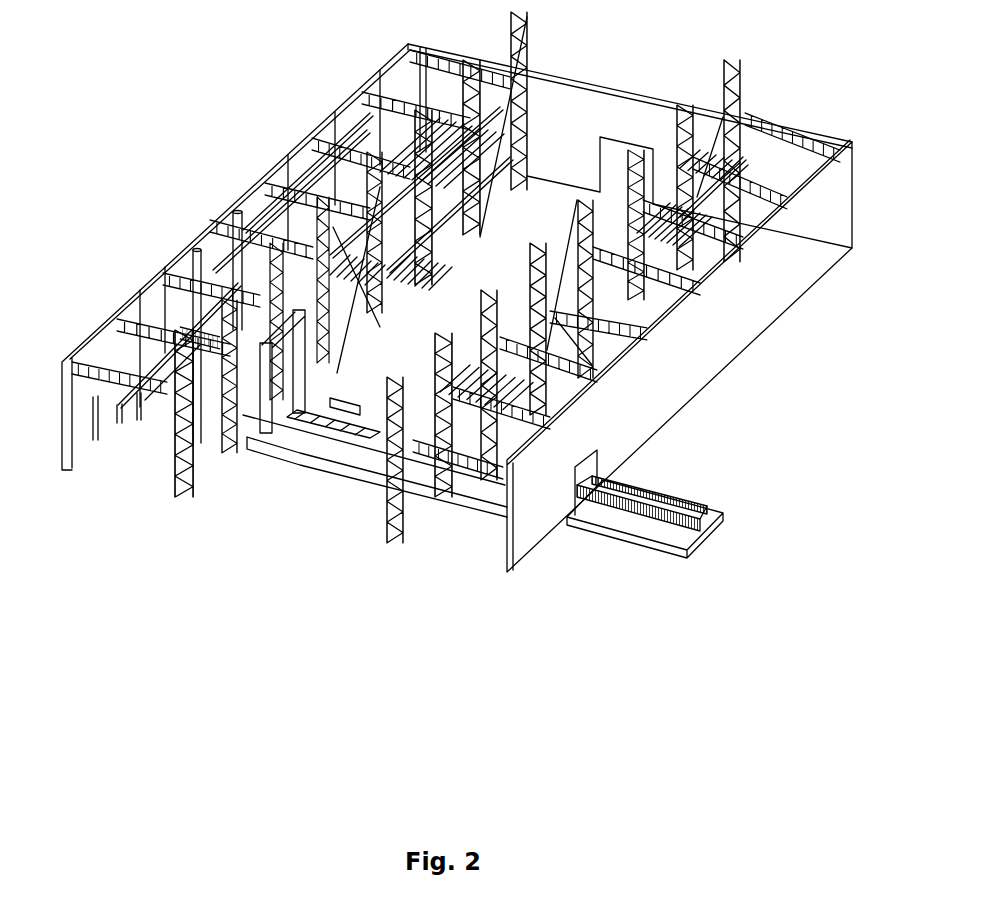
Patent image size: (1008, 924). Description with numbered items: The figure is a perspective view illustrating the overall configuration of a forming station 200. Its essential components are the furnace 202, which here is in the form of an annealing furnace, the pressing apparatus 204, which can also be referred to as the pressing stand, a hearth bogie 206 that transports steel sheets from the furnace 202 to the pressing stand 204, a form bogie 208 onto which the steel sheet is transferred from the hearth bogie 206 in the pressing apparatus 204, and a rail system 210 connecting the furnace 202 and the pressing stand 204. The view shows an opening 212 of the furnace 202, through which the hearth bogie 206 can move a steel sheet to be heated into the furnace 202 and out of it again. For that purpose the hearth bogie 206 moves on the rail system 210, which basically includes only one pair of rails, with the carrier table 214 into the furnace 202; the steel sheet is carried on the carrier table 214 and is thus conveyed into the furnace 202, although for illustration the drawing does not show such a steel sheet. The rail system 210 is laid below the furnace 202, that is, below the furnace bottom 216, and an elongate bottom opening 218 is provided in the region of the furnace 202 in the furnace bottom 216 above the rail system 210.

The forming station 200 is at (352, 594).
The furnace 202 is at (135, 420).
The pressing apparatus 204 is at (474, 489).
The hearth bogie 206 is at (333, 466).
The form bogie 208 is at (666, 485).
The rail system 210 is at (712, 525).
The opening 212 is at (312, 390).
The carrier table 214 is at (333, 395).
The furnace bottom 216 is at (240, 298).
The bottom opening 218 is at (245, 447).